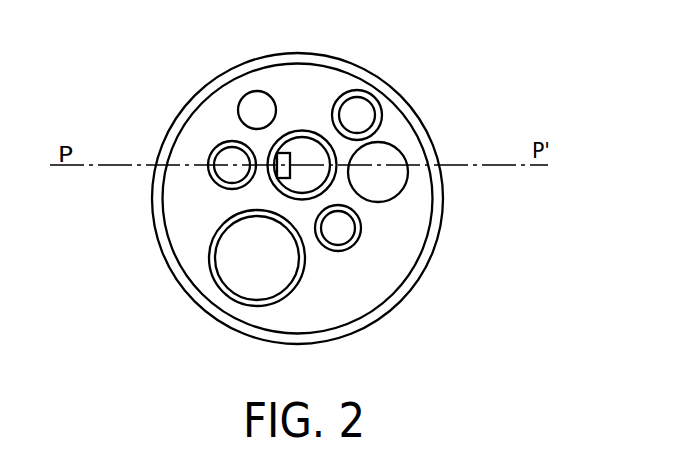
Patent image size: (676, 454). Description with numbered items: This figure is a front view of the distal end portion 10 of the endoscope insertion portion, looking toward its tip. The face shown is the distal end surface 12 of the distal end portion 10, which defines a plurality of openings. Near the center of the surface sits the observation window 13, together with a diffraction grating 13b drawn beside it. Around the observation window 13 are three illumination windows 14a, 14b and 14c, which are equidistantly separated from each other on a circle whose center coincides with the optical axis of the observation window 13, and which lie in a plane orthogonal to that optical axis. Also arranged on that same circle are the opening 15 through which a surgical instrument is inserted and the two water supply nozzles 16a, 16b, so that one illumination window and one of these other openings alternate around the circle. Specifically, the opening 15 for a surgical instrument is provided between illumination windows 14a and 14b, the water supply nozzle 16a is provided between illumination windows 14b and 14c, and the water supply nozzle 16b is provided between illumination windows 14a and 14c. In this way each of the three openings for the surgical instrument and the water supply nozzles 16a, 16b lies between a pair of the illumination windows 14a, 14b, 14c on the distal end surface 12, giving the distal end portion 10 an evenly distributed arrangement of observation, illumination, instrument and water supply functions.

The distal end portion 10 is at (177, 292).
The distal end surface 12 is at (410, 225).
The observation window 13 is at (303, 145).
The diffraction grating 13b is at (283, 153).
The illumination window 14a is at (232, 157).
The illumination window 14b is at (342, 235).
The illumination window 14c is at (358, 113).
The opening for a surgical instrument 15 is at (278, 269).
The water supply nozzle 16a is at (385, 155).
The water supply nozzle 16b is at (257, 103).